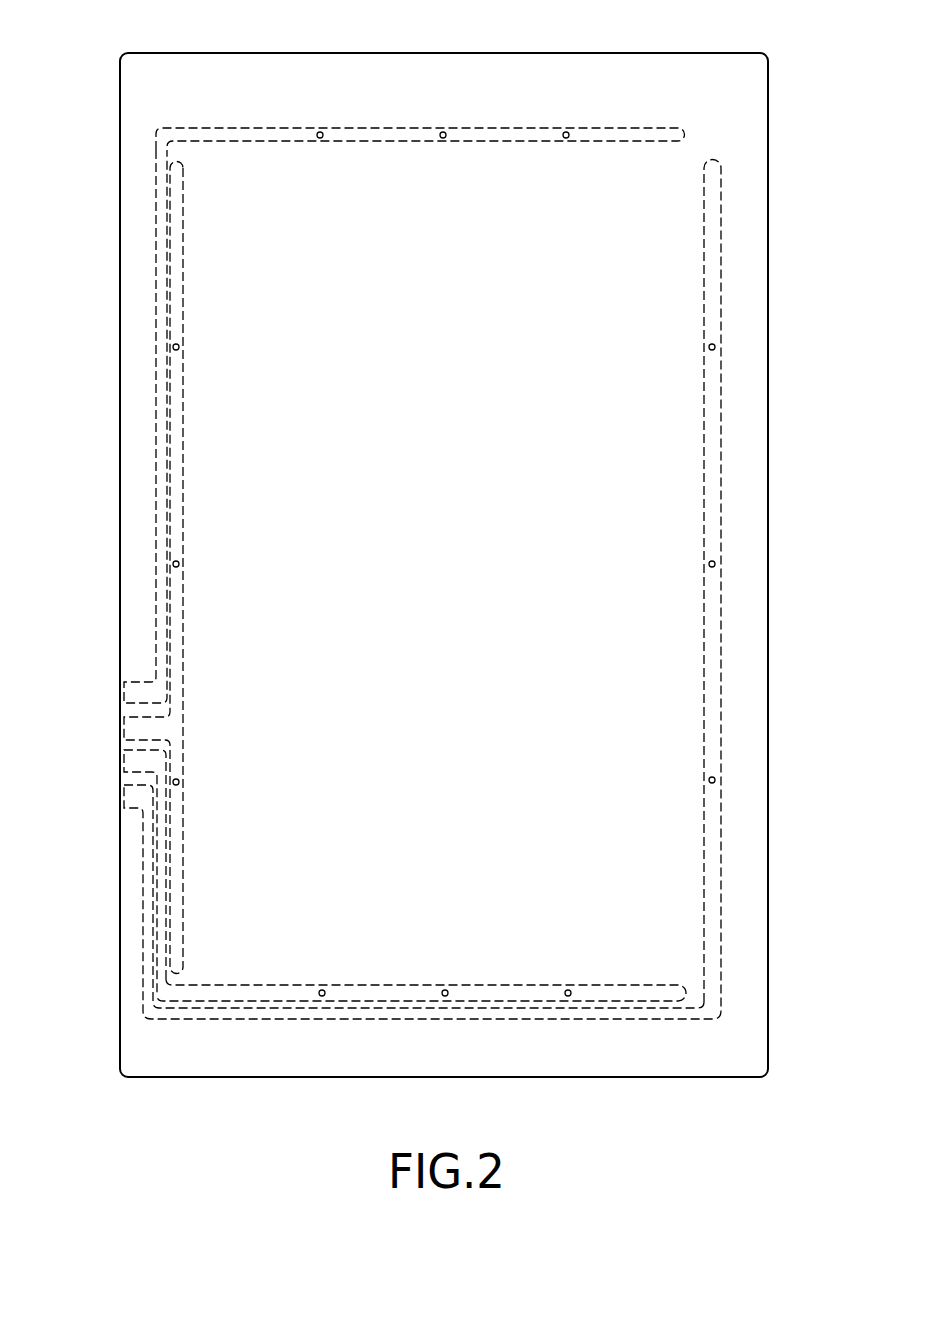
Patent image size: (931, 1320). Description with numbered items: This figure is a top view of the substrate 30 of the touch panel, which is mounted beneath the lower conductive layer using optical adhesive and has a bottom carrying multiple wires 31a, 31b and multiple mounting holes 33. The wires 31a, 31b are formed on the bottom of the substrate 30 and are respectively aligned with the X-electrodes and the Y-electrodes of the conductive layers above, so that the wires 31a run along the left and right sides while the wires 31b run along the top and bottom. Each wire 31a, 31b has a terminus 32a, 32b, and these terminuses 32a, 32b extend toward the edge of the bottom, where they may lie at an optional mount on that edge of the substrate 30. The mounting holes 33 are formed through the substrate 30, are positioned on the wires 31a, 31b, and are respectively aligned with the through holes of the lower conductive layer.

The substrate 30 is at (779, 358).
The wire 31a is at (178, 257).
The wire 31b is at (383, 133).
The terminus 32a is at (157, 727).
The terminus 32b is at (163, 425).
The mounting hole 33 is at (716, 779).